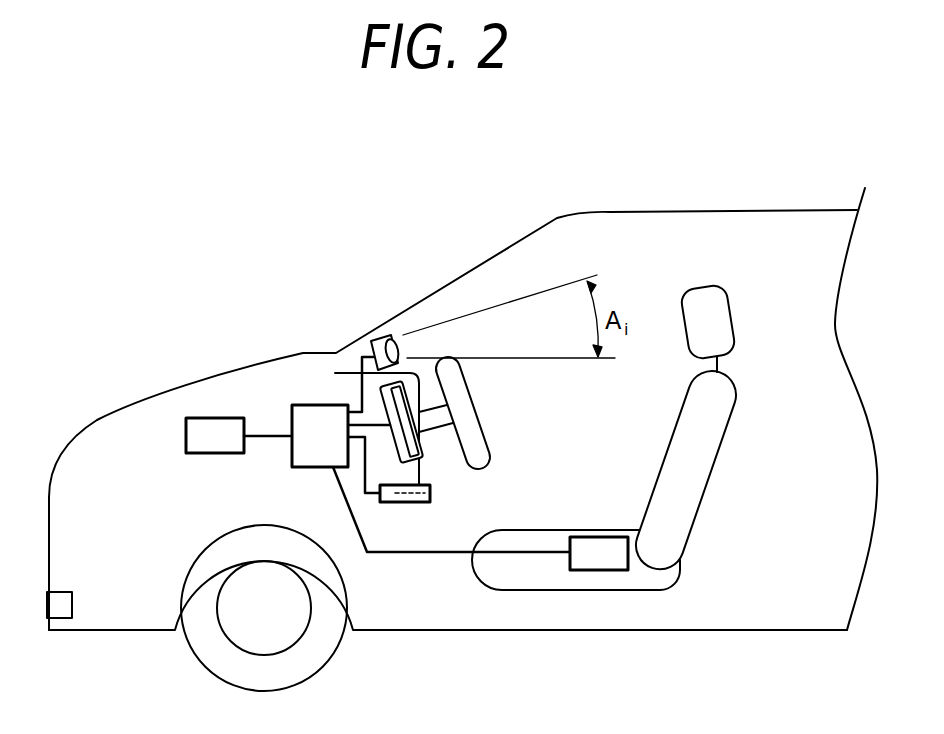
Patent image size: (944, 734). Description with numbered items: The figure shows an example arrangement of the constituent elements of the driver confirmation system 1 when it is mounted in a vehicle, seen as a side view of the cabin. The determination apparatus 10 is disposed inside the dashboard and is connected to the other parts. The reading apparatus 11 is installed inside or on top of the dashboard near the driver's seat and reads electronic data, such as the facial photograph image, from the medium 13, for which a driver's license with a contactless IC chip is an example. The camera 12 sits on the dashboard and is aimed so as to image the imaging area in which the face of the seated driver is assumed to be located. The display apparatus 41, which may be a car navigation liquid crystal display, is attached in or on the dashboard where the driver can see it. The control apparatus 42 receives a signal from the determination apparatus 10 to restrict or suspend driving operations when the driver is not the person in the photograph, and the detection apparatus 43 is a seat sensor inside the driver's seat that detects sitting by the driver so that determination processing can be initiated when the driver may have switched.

The driver confirmation system 1 is at (316, 393).
The determination apparatus 10 is at (292, 460).
The reading apparatus 11 is at (407, 504).
The camera 12 is at (375, 341).
The medium 13 is at (431, 492).
The display apparatus 41 is at (395, 437).
The control apparatus 42 is at (186, 437).
The detection apparatus 43 is at (597, 536).